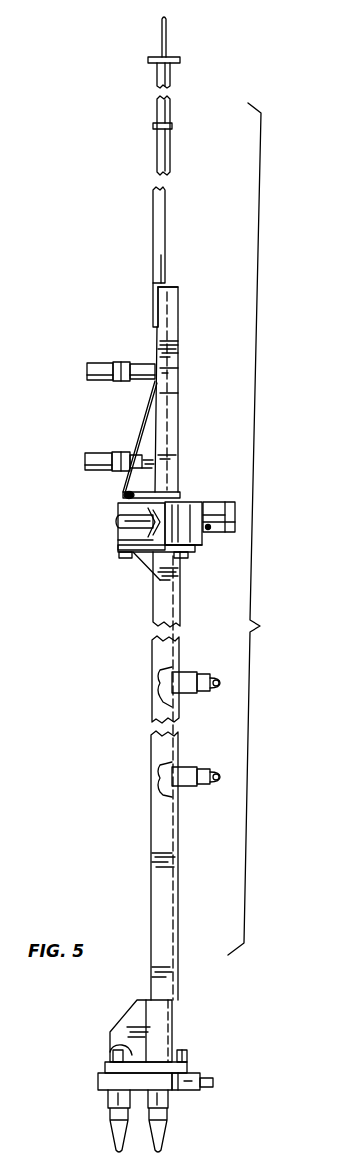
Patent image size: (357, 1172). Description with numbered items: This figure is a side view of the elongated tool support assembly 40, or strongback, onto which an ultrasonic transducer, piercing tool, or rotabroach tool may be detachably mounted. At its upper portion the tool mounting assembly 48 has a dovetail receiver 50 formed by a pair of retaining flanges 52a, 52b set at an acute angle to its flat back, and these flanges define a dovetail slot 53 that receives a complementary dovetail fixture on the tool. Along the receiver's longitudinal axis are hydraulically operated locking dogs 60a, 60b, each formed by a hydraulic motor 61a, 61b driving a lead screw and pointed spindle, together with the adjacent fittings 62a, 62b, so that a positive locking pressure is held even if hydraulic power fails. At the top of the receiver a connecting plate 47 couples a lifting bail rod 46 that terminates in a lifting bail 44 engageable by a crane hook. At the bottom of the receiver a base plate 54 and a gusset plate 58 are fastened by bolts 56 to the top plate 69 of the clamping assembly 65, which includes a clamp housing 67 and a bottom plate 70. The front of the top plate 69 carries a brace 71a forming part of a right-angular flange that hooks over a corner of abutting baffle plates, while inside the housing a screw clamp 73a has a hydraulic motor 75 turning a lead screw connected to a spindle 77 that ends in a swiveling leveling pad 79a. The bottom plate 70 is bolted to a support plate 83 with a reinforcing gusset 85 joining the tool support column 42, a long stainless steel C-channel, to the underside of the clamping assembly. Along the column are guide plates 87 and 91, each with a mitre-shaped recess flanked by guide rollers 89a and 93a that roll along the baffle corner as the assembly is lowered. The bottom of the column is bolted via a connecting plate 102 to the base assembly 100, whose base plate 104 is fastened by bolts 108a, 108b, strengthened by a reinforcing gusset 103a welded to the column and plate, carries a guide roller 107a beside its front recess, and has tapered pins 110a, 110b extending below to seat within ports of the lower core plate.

The tool support assembly 40 is at (256, 529).
The tool support column 42 is at (152, 747).
The lifting bail 44 is at (168, 43).
The lifting bail rod 46 is at (171, 158).
The connecting plate 47 is at (153, 303).
The tool mounting assembly 48 is at (197, 322).
The dovetail receiver 50 is at (177, 352).
The retaining flange 52a is at (178, 290).
The retaining flange 52b is at (178, 369).
The dovetail slot 53 is at (178, 394).
The base plate 54 is at (168, 483).
The bolts 56 is at (121, 493).
The gusset plate 58 is at (148, 418).
The locking dog 60a is at (100, 362).
The locking dog 60b is at (90, 455).
The hydraulic motor 61a is at (87, 379).
The hydraulic motor 61b is at (85, 469).
The collar 62a is at (123, 362).
The collar 62b is at (119, 445).
The clamping assembly 65 is at (183, 512).
The clamp housing 67 is at (190, 546).
The top plate 69 is at (118, 505).
The bottom plate 70 is at (120, 542).
The brace 71a is at (208, 502).
The screw clamp 73a is at (118, 521).
The hydraulic motor 75 is at (130, 551).
The spindle 77 is at (210, 530).
The leveling pad 79a is at (210, 527).
The support plate 83 is at (172, 557).
The reinforcing gusset 85 is at (148, 570).
The guide plate 87 is at (188, 672).
The guide roller 89a is at (219, 686).
The guide plate 91 is at (188, 767).
The guide roller 93a is at (217, 781).
The base assembly 100 is at (98, 1012).
The connecting plate 102 is at (189, 1068).
The reinforcing gusset 103a is at (131, 1012).
The base plate 104 is at (100, 1080).
The guide roller 107a is at (214, 1083).
The bolt 108a is at (113, 1055).
The bolt 108b is at (183, 1055).
The tapered pin 110a is at (108, 1133).
The tapered pin 110b is at (166, 1133).